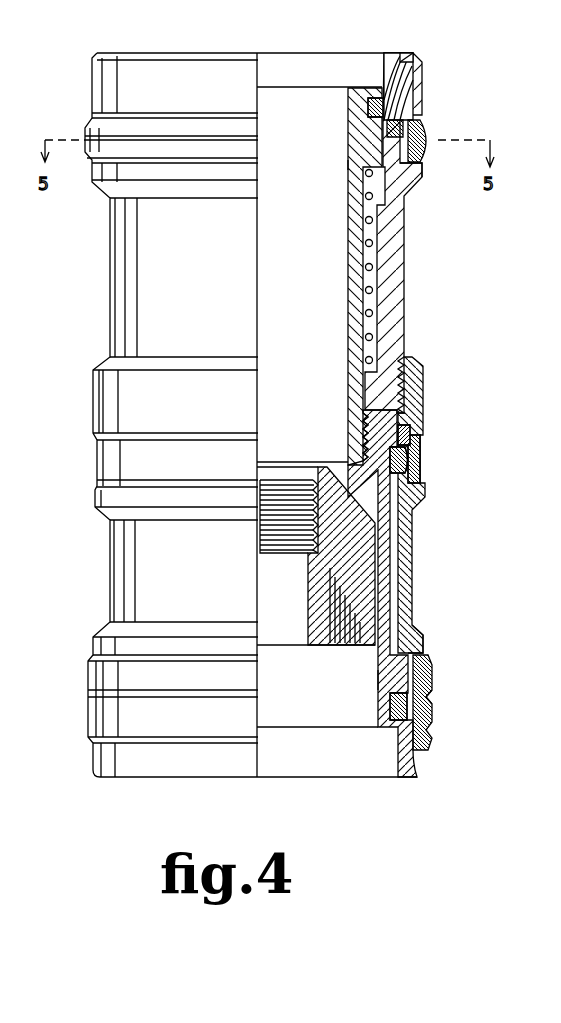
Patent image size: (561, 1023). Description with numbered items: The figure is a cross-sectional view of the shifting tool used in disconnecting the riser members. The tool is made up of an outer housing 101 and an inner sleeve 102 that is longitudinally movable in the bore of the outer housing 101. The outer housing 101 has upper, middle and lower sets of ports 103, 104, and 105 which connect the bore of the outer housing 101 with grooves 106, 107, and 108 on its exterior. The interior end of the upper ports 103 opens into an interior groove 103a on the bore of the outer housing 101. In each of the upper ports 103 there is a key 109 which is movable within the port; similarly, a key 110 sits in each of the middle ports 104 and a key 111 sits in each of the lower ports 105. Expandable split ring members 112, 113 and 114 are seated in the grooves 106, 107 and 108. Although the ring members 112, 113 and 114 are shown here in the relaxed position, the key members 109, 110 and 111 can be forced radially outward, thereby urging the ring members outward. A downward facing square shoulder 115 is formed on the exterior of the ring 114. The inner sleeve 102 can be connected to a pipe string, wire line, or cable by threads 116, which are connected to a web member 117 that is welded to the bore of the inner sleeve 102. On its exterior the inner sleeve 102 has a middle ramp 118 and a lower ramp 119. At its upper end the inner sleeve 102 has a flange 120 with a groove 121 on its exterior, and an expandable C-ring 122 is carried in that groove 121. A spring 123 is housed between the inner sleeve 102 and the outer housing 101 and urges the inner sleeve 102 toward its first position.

The outer housing 101 is at (395, 327).
The inner sleeve 102 is at (347, 300).
The upper ports 103 is at (410, 100).
The interior groove 103a is at (408, 56).
The middle ports 104 is at (418, 412).
The lower ports 105 is at (398, 668).
The groove 106 is at (405, 122).
The groove 107 is at (412, 430).
The groove 108 is at (424, 640).
The key 109 is at (422, 182).
The key 110 is at (410, 462).
The key 111 is at (432, 735).
The expandable split ring member 112 is at (429, 135).
The expandable split ring member 113 is at (422, 482).
The expandable split ring member 114 is at (420, 690).
The downward facing square shoulder 115 is at (433, 700).
The threads 116 is at (303, 492).
The web member 117 is at (307, 597).
The middle ramp 118 is at (378, 428).
The lower ramp 119 is at (387, 681).
The flange 120 is at (347, 166).
The groove 121 is at (362, 140).
The expandable C-ring 122 is at (367, 106).
The spring 123 is at (373, 250).